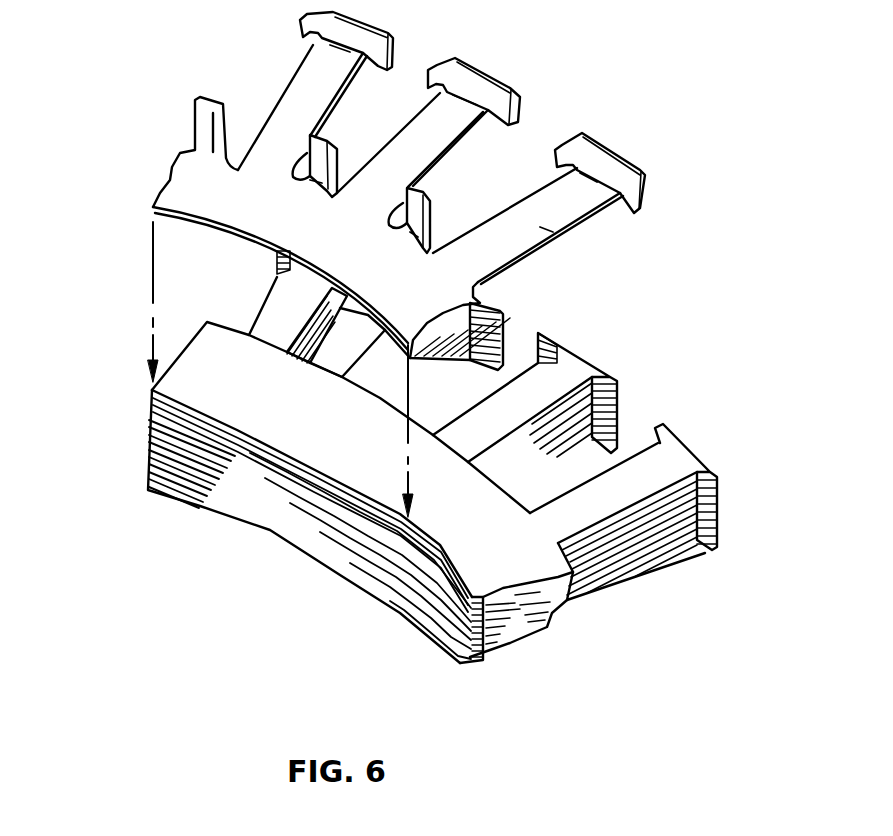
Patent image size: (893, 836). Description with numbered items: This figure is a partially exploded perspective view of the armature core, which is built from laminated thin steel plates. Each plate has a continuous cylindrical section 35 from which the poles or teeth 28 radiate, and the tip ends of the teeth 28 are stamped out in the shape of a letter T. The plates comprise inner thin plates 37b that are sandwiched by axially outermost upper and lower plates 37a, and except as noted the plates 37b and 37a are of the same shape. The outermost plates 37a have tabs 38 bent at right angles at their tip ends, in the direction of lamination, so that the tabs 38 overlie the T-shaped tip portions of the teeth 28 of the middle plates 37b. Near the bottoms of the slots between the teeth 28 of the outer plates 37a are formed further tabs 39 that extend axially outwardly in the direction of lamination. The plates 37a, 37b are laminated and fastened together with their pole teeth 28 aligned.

The teeth 28 is at (563, 228).
The continuous cylindrical section 35 is at (200, 228).
The axial outermost upper and lower plates 37a is at (193, 183).
The inner thin plates 37b is at (718, 547).
The tabs 38 is at (613, 157).
The further tabs 39 is at (488, 165).